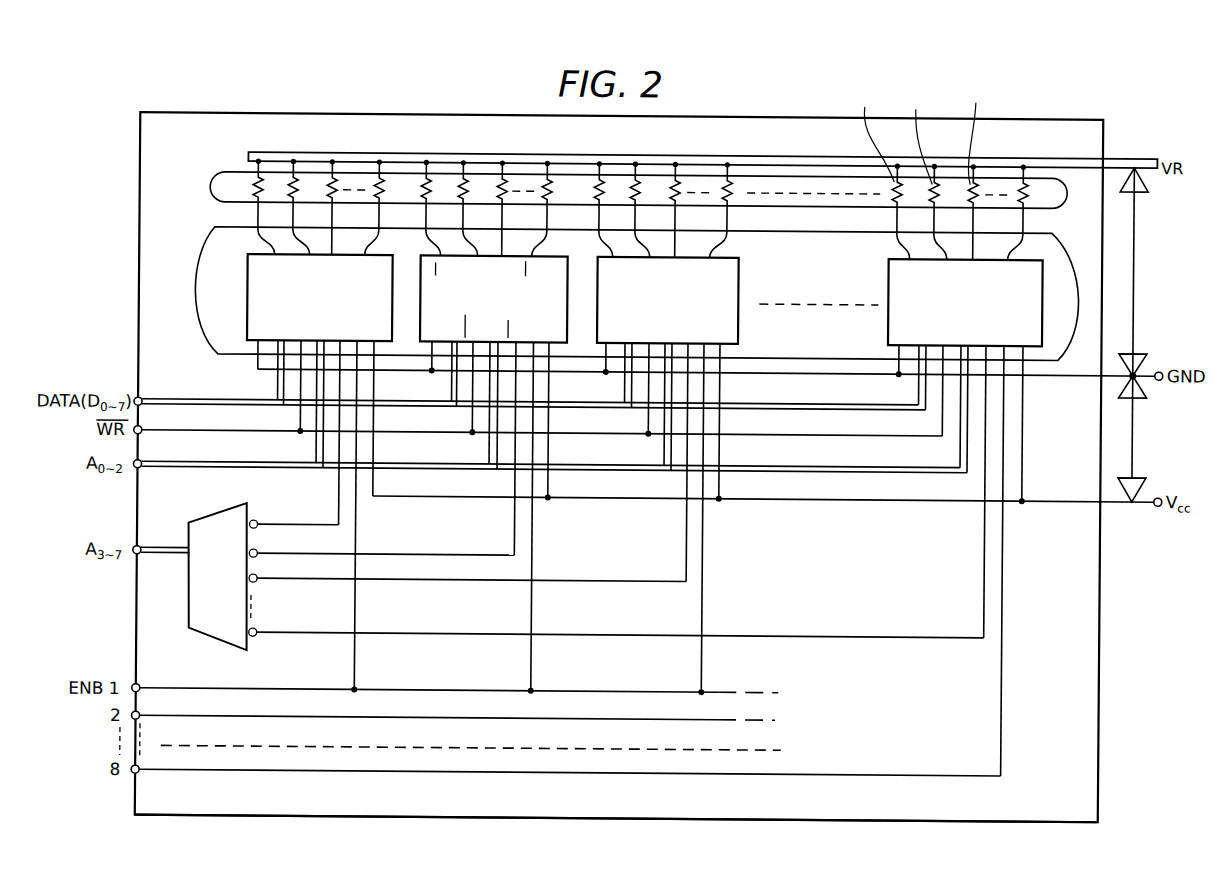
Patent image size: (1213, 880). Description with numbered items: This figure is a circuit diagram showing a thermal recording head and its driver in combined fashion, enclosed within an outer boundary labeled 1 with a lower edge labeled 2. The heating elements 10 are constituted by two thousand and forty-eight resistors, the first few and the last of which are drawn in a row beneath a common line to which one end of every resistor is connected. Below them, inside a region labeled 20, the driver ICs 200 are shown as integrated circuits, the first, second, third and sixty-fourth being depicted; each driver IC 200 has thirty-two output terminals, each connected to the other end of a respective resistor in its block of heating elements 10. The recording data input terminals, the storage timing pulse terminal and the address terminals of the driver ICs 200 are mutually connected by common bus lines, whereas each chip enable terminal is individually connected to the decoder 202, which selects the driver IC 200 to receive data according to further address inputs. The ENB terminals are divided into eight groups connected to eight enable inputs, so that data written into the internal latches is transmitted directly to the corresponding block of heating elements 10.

The circuit board / housing 1 is at (177, 115).
The board edge connector 2 is at (152, 794).
The heating elements 10 is at (207, 187).
The integrated circuit group 20 is at (196, 293).
The driver IC 200 is at (303, 286).
The decoder 202 is at (216, 517).